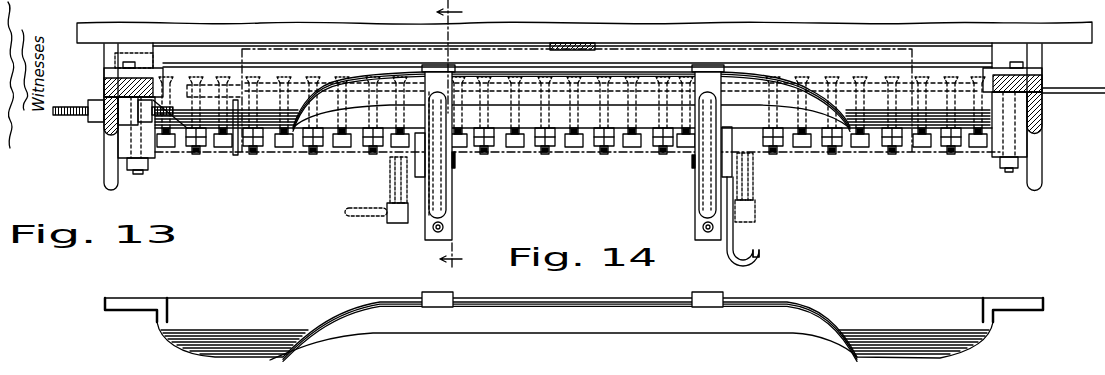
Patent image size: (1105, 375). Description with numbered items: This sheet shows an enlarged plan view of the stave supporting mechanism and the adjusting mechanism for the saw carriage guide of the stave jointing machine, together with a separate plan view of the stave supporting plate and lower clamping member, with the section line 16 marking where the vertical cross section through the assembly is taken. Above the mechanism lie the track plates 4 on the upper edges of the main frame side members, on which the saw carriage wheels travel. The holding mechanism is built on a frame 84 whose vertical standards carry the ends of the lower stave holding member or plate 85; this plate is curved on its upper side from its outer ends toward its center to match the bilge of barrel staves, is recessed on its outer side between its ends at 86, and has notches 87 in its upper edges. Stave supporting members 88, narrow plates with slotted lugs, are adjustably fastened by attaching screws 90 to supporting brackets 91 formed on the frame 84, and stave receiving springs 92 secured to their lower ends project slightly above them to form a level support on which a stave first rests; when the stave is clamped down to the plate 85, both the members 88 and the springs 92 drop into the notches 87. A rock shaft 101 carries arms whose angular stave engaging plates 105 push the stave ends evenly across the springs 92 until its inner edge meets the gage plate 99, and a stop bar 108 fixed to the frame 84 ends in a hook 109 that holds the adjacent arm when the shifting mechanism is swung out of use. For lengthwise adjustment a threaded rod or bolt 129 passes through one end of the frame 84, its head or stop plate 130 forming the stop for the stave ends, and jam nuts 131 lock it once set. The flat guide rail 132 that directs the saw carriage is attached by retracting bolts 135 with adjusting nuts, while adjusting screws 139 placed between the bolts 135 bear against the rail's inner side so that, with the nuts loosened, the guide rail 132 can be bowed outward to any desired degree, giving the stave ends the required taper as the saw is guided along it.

In FIG. 13, the track plates 4 is at (855, 30).
In FIG. 13, the section line 16— 16 is at (451, 143).
In FIG. 13, the frame 84 is at (107, 160).
In FIG. 14, the lower stave holding member or plate 85 is at (248, 310).
In FIG. 13, the recess 86 is at (622, 86).
In FIG. 14, the recess 86 is at (575, 331).
In FIG. 13, the notches 87 is at (423, 66).
In FIG. 14, the notches 87 is at (447, 308).
In FIG. 13, the stave supporting members 88 is at (452, 197).
In FIG. 13, the attaching screws 90 is at (457, 162).
In FIG. 13, the supporting brackets 91 is at (418, 178).
In FIG. 13, the stave receiving springs 92 is at (452, 175).
In FIG. 13, the gage plate 99 is at (577, 43).
In FIG. 13, the rock shaft 101 is at (358, 222).
In FIG. 13, the stave engaging plates 105 is at (390, 163).
In FIG. 13, the stop bar 108 is at (734, 230).
In FIG. 13, the hook 109 is at (762, 261).
In FIG. 13, the threaded rod or bolt 129 is at (100, 103).
In FIG. 13, the head or stop plate 130 is at (236, 156).
In FIG. 13, the jam nuts 131 is at (100, 128).
In FIG. 13, the guide rail 132 is at (1083, 95).
In FIG. 13, the retracting bolts 135 is at (950, 153).
In FIG. 13, the adjusting screws 139 is at (858, 150).